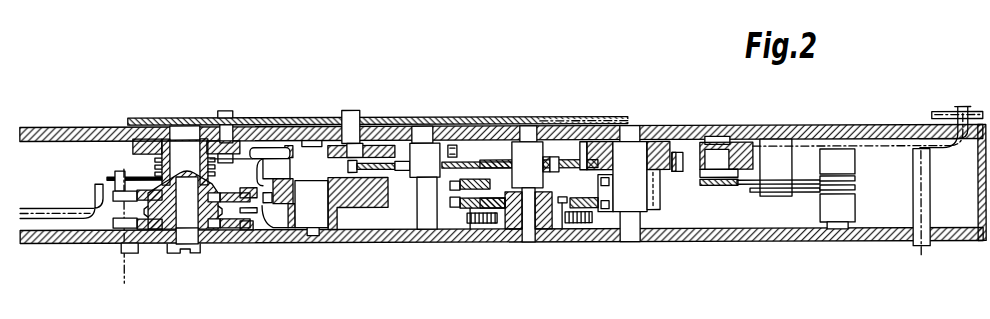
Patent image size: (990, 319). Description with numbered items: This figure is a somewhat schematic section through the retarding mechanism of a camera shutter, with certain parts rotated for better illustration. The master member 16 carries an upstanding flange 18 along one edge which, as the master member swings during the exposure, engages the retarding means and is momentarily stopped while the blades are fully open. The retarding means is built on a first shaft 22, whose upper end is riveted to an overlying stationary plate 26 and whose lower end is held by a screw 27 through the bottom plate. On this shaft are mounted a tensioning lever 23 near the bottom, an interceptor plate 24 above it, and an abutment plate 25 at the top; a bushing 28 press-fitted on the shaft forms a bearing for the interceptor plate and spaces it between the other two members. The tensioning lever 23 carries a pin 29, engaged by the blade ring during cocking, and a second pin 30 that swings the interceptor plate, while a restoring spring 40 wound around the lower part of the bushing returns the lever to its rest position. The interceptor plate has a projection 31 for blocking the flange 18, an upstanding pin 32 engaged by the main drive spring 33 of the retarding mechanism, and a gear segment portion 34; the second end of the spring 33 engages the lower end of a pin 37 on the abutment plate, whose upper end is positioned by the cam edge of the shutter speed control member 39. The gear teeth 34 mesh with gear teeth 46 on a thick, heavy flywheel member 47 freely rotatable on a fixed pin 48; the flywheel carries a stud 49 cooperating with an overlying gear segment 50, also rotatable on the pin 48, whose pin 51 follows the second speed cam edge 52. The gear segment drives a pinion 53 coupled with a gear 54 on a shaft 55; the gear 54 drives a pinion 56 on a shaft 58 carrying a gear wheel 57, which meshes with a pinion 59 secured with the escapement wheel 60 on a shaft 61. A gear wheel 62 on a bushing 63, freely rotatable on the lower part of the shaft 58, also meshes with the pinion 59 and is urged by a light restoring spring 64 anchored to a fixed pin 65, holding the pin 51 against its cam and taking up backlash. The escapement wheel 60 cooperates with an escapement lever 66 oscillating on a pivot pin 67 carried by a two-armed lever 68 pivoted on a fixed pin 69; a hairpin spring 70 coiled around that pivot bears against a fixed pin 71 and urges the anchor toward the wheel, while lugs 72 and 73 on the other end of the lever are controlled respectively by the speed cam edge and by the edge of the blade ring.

The master member 16 is at (67, 214).
The upstanding flange 18 is at (96, 188).
The first shaft 22 is at (185, 125).
The tensioning lever 23 is at (156, 226).
The interceptor plate 24 is at (142, 204).
The abutment plate 25 is at (156, 138).
The stationary plate 26 is at (53, 126).
The screw 27 is at (197, 252).
The bushing 28 is at (220, 228).
The pin 29 is at (127, 273).
The second pin 30 is at (244, 240).
The projection 31 is at (110, 204).
The upstanding pin 32 is at (117, 170).
The spring 33 is at (138, 175).
The gear segment portion 34 is at (278, 213).
The pin 37 is at (225, 110).
The shutter speed control member 39 is at (145, 117).
The restoring spring 40 is at (268, 205).
The gear teeth 46 is at (265, 152).
The flywheel member 47 is at (372, 208).
The fixed pin 48 is at (313, 237).
The stud 49 is at (275, 146).
The gear segment 50 is at (380, 145).
The pin 51 is at (353, 110).
The second speed cam edge 52 is at (312, 117).
The pinion 53 is at (451, 145).
The gear 54 is at (397, 170).
The shaft 55 is at (425, 126).
The pinion 56 is at (548, 157).
The gear wheel 57 is at (568, 175).
The shaft 58 is at (527, 126).
The pinion 59 is at (653, 211).
The escapement wheel 60 is at (657, 142).
The shaft 61 is at (633, 126).
The gear wheel 62 is at (457, 208).
The bushing 63 is at (518, 230).
The light restoring spring 64 is at (562, 204).
The fixed pin 65 is at (478, 224).
The escapement lever 66 is at (693, 163).
The pivot pin 67 is at (728, 147).
The two-armed lever 68 is at (877, 147).
The fixed pin 69 is at (831, 157).
The hairpin spring 70 is at (808, 194).
The fixed pin 71 is at (776, 148).
The lug 72 is at (963, 112).
The lug 73 is at (919, 248).